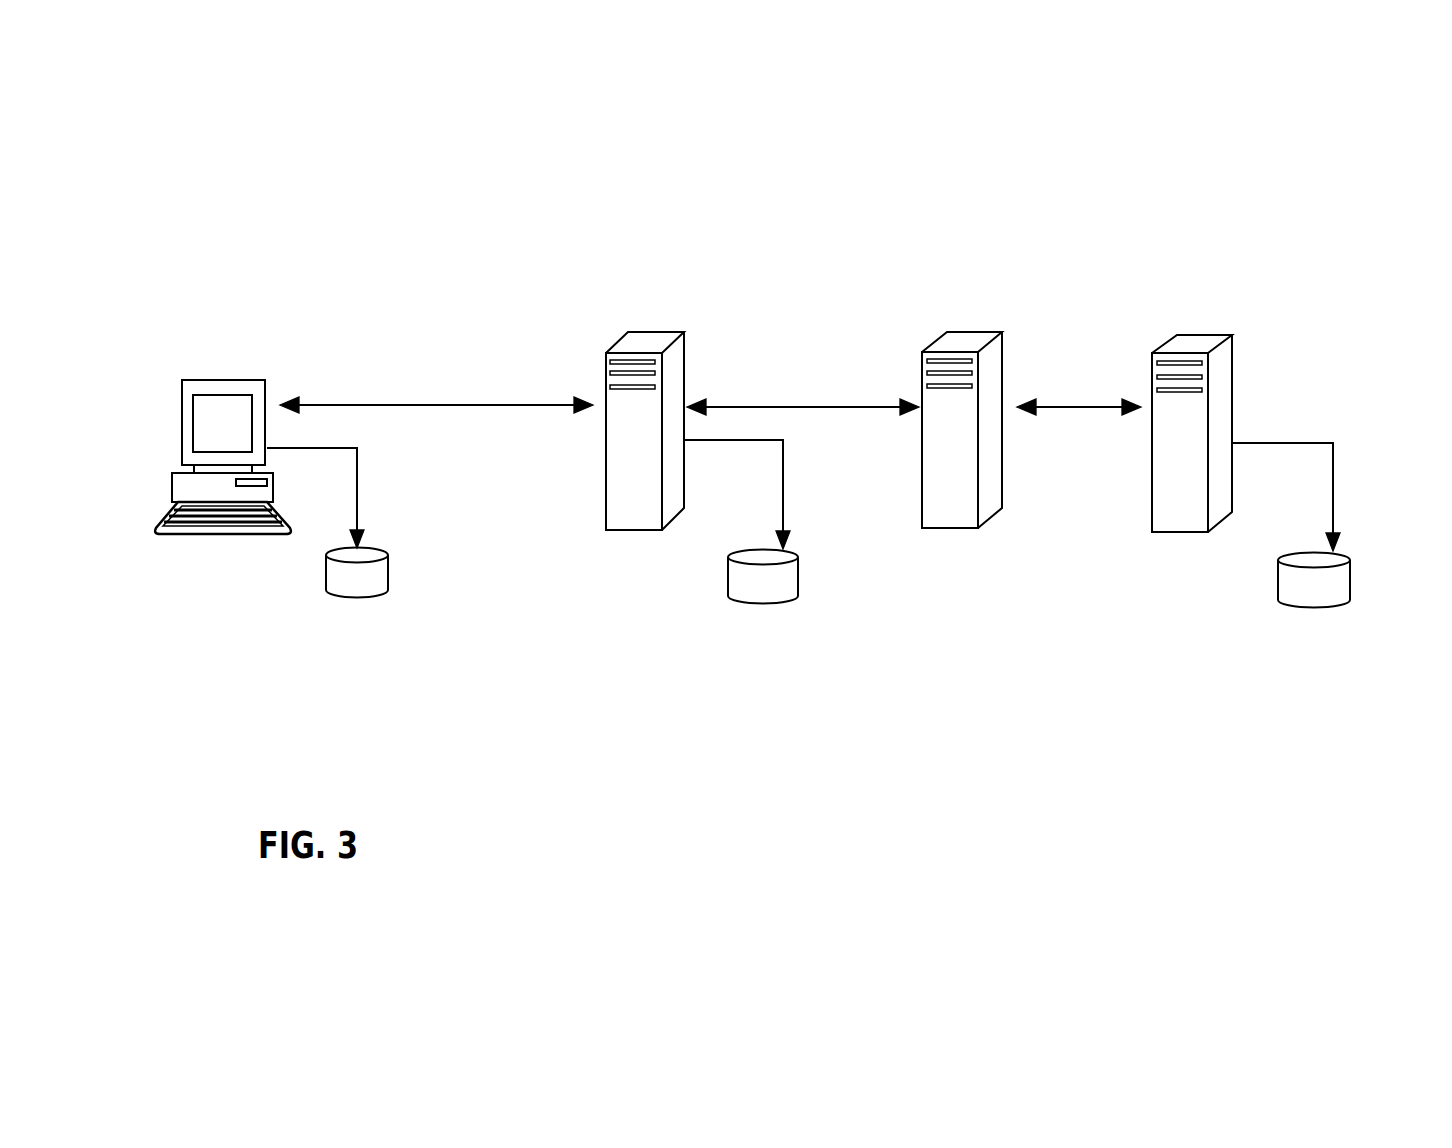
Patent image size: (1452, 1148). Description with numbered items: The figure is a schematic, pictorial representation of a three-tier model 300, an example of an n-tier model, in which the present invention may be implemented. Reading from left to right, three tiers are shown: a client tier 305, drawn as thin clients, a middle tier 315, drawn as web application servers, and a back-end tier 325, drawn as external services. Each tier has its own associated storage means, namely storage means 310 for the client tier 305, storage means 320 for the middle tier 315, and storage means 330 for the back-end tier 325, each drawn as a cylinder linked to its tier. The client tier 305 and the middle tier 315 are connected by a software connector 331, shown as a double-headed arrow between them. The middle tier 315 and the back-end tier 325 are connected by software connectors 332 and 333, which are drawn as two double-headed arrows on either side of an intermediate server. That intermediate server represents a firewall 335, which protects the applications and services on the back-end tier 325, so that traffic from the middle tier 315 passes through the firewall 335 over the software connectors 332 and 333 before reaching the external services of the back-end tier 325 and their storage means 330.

The three-tier model 300 is at (198, 171).
The client tier 305 is at (183, 383).
The storage means 310 is at (388, 583).
The middle tier 315 is at (607, 388).
The storage means 320 is at (800, 587).
The back-end tier 325 is at (1238, 378).
The storage means 330 is at (1350, 590).
The software connector 331 is at (436, 386).
The software connector 332 is at (803, 388).
The software connector 333 is at (1079, 389).
The firewall 335 is at (913, 390).